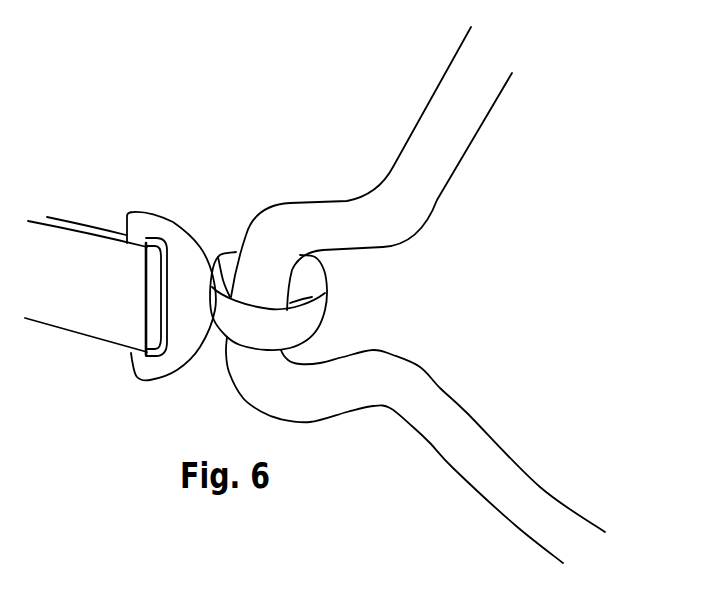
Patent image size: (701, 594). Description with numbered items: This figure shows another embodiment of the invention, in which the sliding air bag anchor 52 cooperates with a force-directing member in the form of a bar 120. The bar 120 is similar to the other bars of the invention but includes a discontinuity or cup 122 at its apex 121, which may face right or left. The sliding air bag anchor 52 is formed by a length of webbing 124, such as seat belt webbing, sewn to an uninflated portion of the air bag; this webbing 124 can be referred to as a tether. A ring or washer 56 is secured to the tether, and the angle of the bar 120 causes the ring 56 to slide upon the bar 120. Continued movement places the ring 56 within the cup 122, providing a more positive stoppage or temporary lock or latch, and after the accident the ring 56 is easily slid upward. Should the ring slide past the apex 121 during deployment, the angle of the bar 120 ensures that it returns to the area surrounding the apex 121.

The sliding air bag anchor 52 is at (144, 209).
The ring 56 is at (308, 318).
The bar 120 is at (280, 231).
The apex 121 is at (335, 343).
The cup 122 is at (273, 361).
The webbing 124 is at (93, 312).